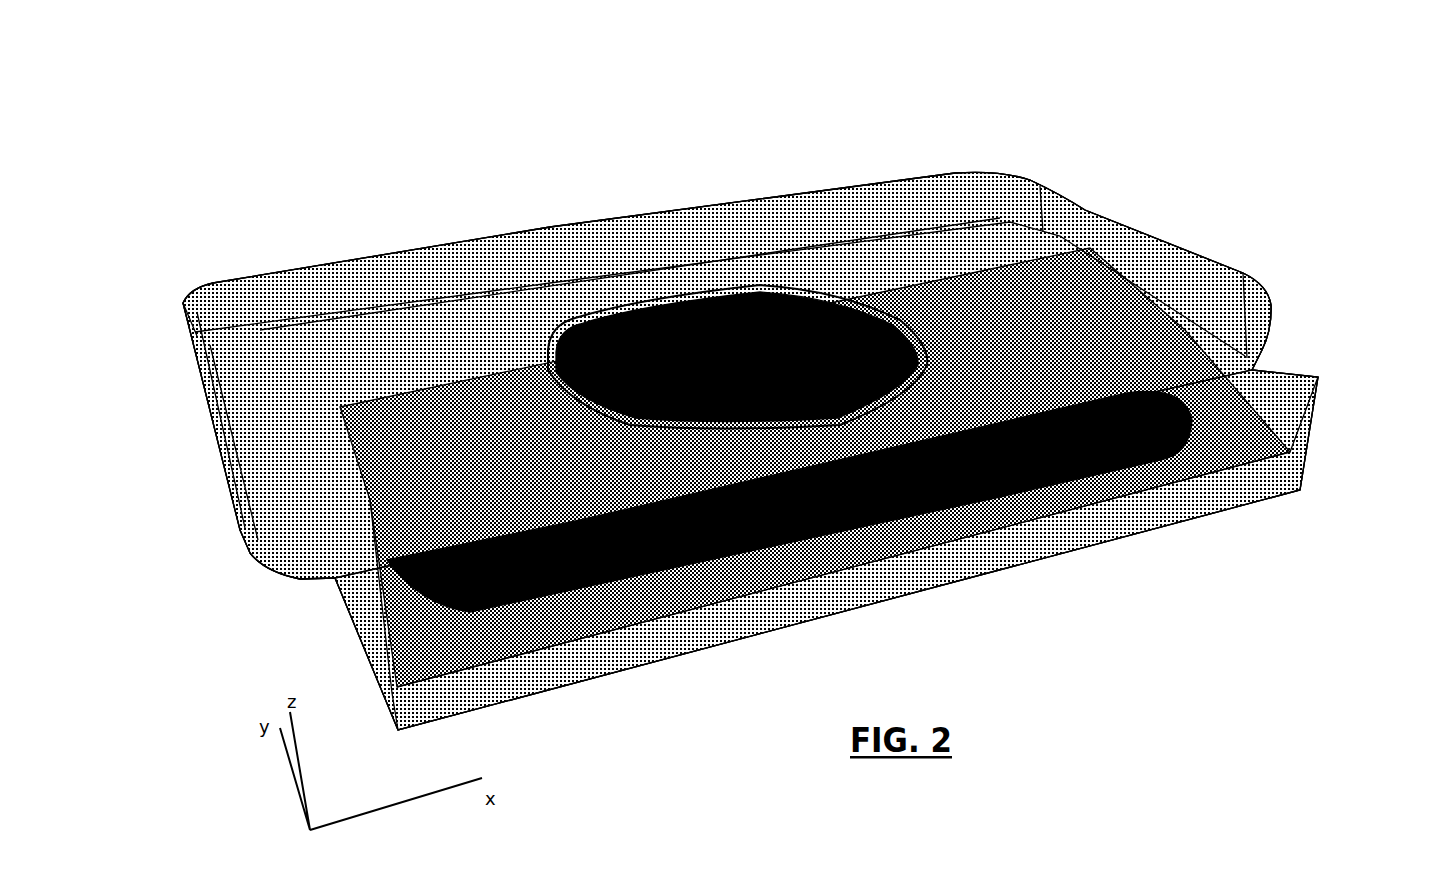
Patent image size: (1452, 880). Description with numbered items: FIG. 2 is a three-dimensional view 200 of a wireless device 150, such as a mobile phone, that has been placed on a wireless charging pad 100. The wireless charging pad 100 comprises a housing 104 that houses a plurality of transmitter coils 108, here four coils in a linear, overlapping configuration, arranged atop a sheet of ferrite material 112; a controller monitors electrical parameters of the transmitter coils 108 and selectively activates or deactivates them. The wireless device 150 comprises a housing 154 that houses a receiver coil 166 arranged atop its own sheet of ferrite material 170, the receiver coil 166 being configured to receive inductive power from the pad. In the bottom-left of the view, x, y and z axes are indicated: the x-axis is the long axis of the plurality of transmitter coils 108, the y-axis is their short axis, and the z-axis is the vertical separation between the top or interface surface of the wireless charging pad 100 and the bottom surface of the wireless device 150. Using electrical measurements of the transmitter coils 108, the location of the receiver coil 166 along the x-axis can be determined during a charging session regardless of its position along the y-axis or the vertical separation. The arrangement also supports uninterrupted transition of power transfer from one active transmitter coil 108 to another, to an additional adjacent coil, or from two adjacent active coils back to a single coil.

The three-dimensional view 200 is at (1224, 66).
The wireless charging pad 100 is at (1285, 355).
The housing 104 is at (826, 550).
The transmitter coils 108 is at (420, 415).
The sheet of ferrite material 112 is at (330, 430).
The wireless device 150 is at (1085, 205).
The housing 154 is at (727, 375).
The receiver coil 166 is at (575, 322).
The sheet of ferrite material 170 is at (660, 295).